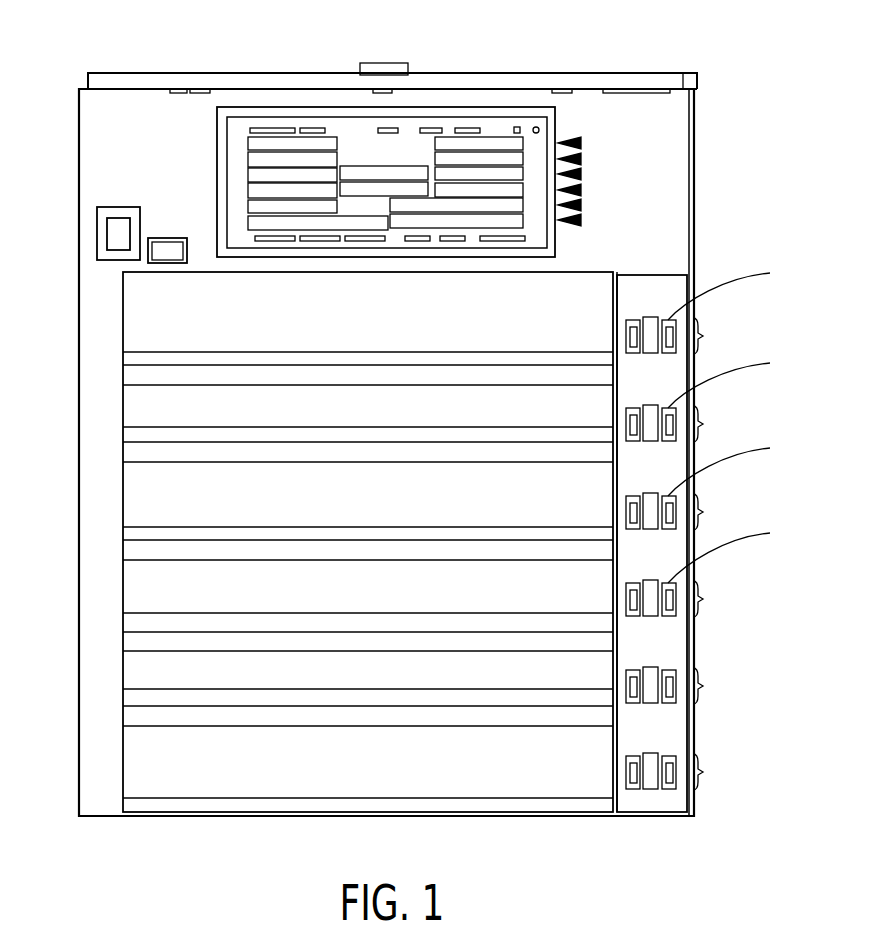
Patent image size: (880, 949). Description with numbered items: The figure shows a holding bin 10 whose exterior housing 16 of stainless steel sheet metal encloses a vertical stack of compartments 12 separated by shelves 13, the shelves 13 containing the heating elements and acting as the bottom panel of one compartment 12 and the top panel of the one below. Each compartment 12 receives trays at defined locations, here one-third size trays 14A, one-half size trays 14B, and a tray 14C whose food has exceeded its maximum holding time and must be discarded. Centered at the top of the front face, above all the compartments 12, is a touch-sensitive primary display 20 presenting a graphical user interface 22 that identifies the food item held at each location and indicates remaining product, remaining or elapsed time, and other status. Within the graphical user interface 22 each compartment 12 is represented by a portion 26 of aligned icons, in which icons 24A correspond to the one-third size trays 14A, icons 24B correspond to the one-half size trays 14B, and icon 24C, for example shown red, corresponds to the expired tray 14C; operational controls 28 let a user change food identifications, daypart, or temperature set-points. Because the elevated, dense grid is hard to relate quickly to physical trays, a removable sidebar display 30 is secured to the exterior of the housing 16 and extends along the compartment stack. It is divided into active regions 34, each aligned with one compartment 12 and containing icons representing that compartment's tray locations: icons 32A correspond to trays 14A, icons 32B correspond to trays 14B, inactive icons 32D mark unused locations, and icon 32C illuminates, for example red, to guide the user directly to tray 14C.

The holding bin 10 is at (722, 130).
The compartment 12 is at (135, 318).
The shelf 13 is at (135, 372).
The one-third size tray 14A is at (367, 510).
The one-half size tray 14B is at (367, 725).
The tray with expired food 14C is at (216, 604).
The exterior housing 16 is at (693, 232).
The primary display 20 is at (553, 109).
The graphical user interface 22 is at (473, 76).
The icon for one-third size tray 24A is at (328, 157).
The icon for one-half size tray 24B is at (255, 226).
The expired-food icon 24C is at (255, 190).
The portion of the GUI 26 is at (582, 174).
The operational controls 28 is at (217, 116).
The sidebar display 30 is at (638, 289).
The sidebar icon for one-third size tray 32A is at (633, 320).
The sidebar icon for one-half size tray 32B is at (668, 670).
The sidebar expired-food icon 32C is at (650, 616).
The inactive icon 32D is at (650, 353).
The active region 34 is at (710, 555).